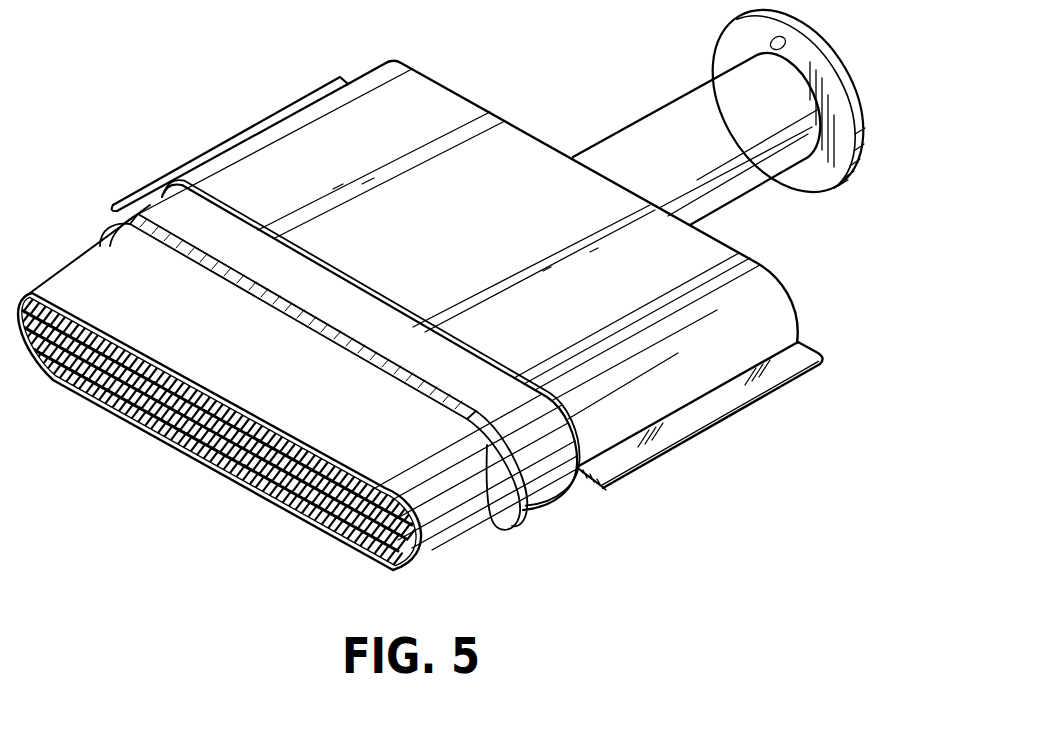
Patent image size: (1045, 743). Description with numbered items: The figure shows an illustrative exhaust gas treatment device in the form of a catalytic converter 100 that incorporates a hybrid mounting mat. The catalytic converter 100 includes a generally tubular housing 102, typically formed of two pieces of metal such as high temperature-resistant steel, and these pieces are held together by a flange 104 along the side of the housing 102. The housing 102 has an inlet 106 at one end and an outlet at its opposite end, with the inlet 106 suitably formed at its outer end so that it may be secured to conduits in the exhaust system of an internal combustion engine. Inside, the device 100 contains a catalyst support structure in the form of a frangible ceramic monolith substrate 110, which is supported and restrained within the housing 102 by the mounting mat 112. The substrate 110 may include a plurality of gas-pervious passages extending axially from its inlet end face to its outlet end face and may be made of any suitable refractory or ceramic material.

The catalytic converter 100 is at (228, 114).
The tubular housing 102 is at (776, 289).
The flange 104 is at (660, 455).
The inlet 106 is at (218, 462).
The ceramic monolith substrate 110 is at (97, 283).
The mounting mat 112 is at (508, 534).